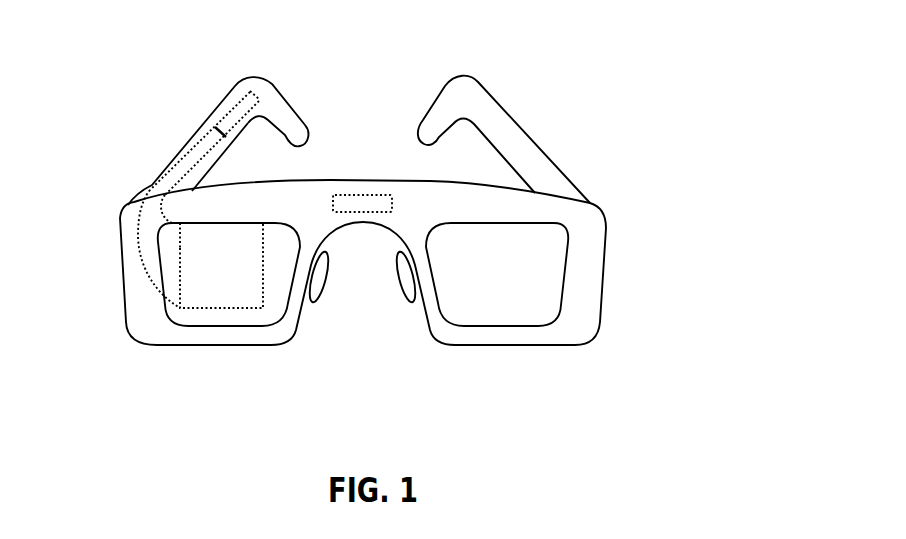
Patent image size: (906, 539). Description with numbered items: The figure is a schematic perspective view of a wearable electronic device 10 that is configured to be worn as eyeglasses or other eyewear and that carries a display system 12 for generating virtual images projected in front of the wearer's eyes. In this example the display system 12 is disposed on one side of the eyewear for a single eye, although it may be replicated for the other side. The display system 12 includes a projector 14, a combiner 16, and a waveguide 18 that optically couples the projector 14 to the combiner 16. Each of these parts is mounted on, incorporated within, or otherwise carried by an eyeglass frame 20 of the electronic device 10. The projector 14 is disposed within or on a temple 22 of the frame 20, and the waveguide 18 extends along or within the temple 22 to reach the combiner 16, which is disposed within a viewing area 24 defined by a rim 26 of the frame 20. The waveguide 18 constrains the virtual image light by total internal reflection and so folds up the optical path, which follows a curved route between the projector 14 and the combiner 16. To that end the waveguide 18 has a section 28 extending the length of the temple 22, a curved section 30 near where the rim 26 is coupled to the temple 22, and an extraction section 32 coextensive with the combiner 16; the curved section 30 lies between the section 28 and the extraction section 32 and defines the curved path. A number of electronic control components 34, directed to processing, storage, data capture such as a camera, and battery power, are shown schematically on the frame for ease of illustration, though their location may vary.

The electronic device 10 is at (514, 40).
The display system 12 is at (178, 106).
The projector 14 is at (237, 102).
The combiner 16 is at (233, 276).
The waveguide 18 is at (169, 176).
The eyeglass frame 20 is at (607, 219).
The temple 22 is at (227, 153).
The viewing area 24 is at (267, 313).
The rim 26 is at (207, 337).
The section 28 is at (190, 172).
The curved section 30 is at (138, 226).
The extraction section 32 is at (180, 222).
The control components 34 is at (360, 195).